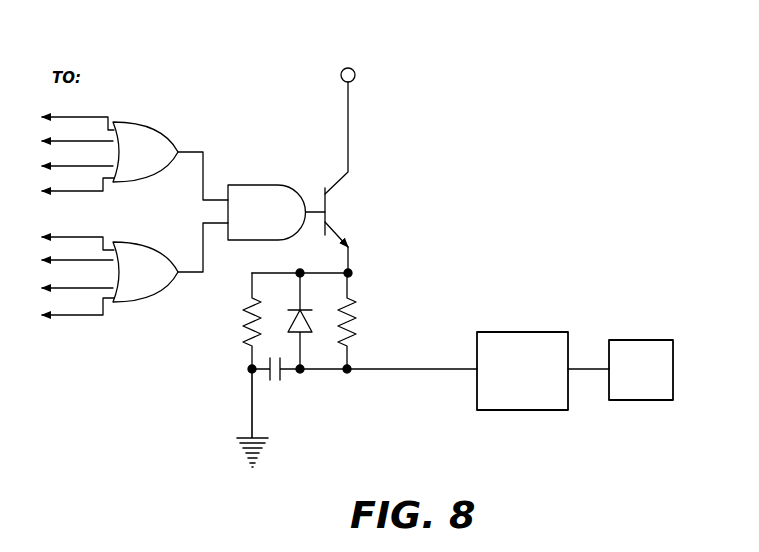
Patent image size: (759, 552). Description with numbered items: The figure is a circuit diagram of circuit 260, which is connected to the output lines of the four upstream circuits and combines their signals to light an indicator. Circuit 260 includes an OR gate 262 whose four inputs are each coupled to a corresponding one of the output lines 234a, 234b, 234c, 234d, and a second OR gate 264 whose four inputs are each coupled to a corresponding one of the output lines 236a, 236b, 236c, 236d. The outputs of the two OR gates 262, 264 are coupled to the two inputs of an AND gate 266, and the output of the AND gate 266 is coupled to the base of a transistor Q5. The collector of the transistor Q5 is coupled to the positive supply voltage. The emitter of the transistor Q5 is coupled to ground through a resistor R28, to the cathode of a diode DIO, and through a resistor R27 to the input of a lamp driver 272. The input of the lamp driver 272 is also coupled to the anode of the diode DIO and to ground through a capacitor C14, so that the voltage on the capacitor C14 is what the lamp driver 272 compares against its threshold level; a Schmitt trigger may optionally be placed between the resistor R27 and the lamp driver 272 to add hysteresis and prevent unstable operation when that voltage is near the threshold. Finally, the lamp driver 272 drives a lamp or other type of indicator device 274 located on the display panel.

The circuit 260 is at (178, 418).
The output line 234a is at (78, 113).
The output line 234b is at (77, 130).
The output line 234c is at (77, 156).
The output line 234d is at (78, 181).
The output line 236a is at (78, 233).
The output line 236b is at (77, 250).
The output line 236c is at (77, 278).
The output line 236d is at (78, 305).
The OR gate 262 is at (149, 127).
The OR gate 264 is at (142, 247).
The AND gate 266 is at (252, 185).
The lamp driver 272 is at (517, 332).
The indicator device 274 is at (629, 340).
The transistor Q5 is at (339, 159).
The resistor R28 is at (224, 321).
The resistor R27 is at (368, 321).
The diode DIO is at (312, 324).
The capacitor C14 is at (276, 381).